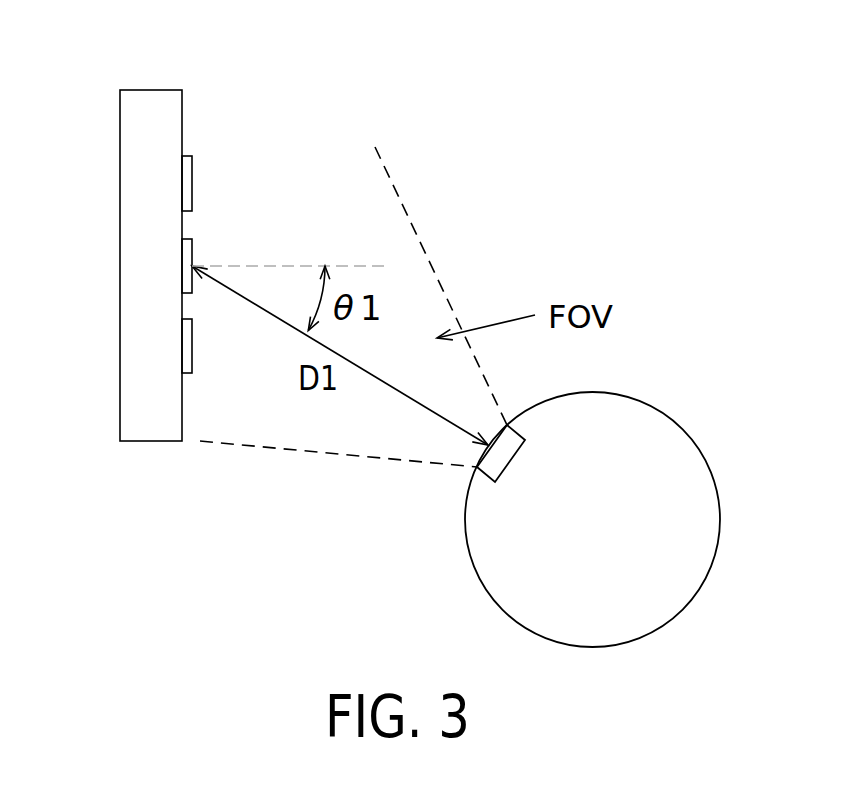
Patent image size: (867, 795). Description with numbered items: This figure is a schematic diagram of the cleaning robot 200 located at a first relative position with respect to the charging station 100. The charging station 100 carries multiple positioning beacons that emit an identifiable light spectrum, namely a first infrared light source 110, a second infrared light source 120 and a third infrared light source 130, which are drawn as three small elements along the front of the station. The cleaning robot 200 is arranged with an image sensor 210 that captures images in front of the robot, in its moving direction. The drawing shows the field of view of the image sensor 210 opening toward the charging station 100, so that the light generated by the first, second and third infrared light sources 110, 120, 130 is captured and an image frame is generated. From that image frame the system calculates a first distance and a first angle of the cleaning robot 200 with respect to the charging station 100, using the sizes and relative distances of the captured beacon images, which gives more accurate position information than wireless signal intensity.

The charging station 100 is at (128, 96).
The first infrared light source 110 is at (186, 373).
The second infrared light source 120 is at (187, 156).
The third infrared light source 130 is at (187, 263).
The cleaning robot 200 is at (693, 437).
The image sensor 210 is at (480, 473).